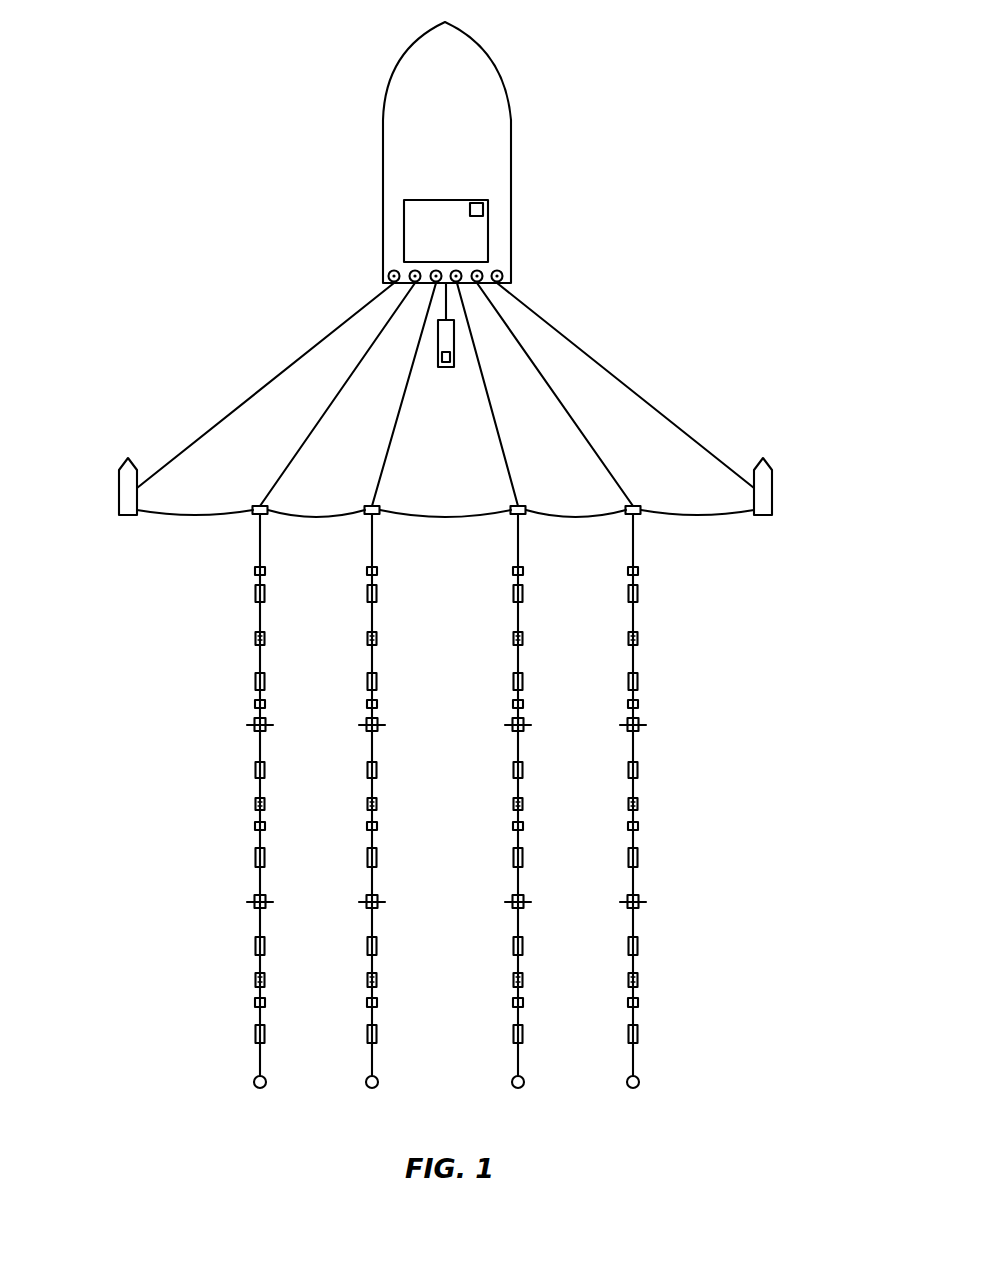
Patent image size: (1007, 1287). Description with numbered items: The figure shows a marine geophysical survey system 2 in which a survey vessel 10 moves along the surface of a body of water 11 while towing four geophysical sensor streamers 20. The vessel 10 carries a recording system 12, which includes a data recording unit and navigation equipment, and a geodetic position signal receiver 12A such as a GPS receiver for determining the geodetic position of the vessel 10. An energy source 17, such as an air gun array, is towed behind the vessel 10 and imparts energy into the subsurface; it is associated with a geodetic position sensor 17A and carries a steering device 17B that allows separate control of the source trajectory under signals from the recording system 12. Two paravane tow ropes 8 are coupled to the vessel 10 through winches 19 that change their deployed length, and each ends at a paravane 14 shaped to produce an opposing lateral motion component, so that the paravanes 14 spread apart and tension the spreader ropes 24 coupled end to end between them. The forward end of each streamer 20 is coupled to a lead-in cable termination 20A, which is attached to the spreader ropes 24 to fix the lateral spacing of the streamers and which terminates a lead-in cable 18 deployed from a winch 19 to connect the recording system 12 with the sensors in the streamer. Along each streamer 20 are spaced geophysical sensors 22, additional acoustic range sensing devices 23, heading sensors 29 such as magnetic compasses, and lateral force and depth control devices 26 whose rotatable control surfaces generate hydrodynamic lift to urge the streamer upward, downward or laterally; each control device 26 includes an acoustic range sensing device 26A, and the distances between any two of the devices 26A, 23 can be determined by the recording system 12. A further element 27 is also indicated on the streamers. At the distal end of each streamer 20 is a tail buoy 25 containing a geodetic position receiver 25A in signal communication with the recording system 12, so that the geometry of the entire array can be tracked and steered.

The marine geophysical survey system 2 is at (244, 314).
The paravane tow rope 8 is at (294, 362).
The survey vessel 10 is at (512, 128).
The body of water 11 is at (771, 278).
The recording system 12 is at (467, 237).
The geodetic position signal receiver 12A is at (483, 208).
The paravane 14 is at (118, 492).
The energy source 17 is at (454, 327).
The geodetic position sensor 17A is at (454, 347).
The steering device 17B is at (446, 363).
The lead-in cable 18 is at (612, 425).
The winch 19 is at (456, 270).
The geophysical sensor streamer 20 is at (259, 550).
The lead-in cable termination 20A is at (255, 505).
The geophysical sensor 22 is at (255, 590).
The acoustic range sensing device 23 is at (255, 637).
The spreader rope 24 is at (170, 517).
The tail buoy 25 is at (259, 1089).
The geodetic position receiver 25A is at (267, 1078).
The lateral force and depth control device 26 is at (255, 703).
The acoustic range sensing device 26A is at (247, 725).
The acoustic transceiver 27 is at (266, 801).
The heading sensor 29 is at (255, 826).